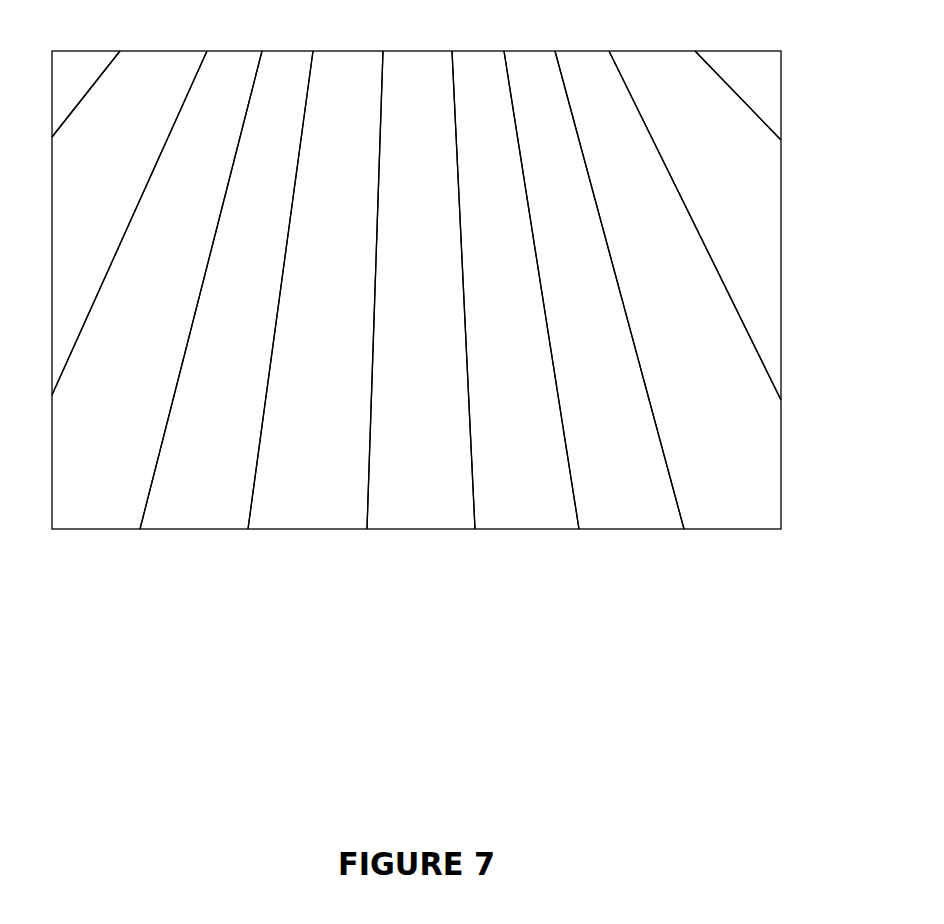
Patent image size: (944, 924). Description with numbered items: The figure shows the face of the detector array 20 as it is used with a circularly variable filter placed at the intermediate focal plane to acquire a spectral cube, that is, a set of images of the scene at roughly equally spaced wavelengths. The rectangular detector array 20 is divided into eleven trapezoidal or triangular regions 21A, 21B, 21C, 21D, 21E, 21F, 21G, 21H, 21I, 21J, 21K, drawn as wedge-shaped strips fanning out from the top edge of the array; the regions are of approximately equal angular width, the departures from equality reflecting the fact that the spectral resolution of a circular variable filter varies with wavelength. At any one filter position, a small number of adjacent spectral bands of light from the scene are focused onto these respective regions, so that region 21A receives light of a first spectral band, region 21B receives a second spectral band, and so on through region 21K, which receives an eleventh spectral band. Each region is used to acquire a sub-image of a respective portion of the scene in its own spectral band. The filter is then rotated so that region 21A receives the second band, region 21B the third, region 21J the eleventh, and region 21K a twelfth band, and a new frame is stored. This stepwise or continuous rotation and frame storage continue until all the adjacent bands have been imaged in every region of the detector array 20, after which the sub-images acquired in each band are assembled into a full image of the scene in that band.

The detector array 20 is at (622, 548).
The region 21A is at (90, 83).
The region 21B is at (108, 170).
The region 21C is at (143, 360).
The region 21D is at (204, 502).
The region 21E is at (342, 502).
The region 21F is at (459, 502).
The region 21G is at (558, 502).
The region 21H is at (643, 502).
The region 21I is at (689, 361).
The region 21J is at (730, 172).
The region 21K is at (769, 84).